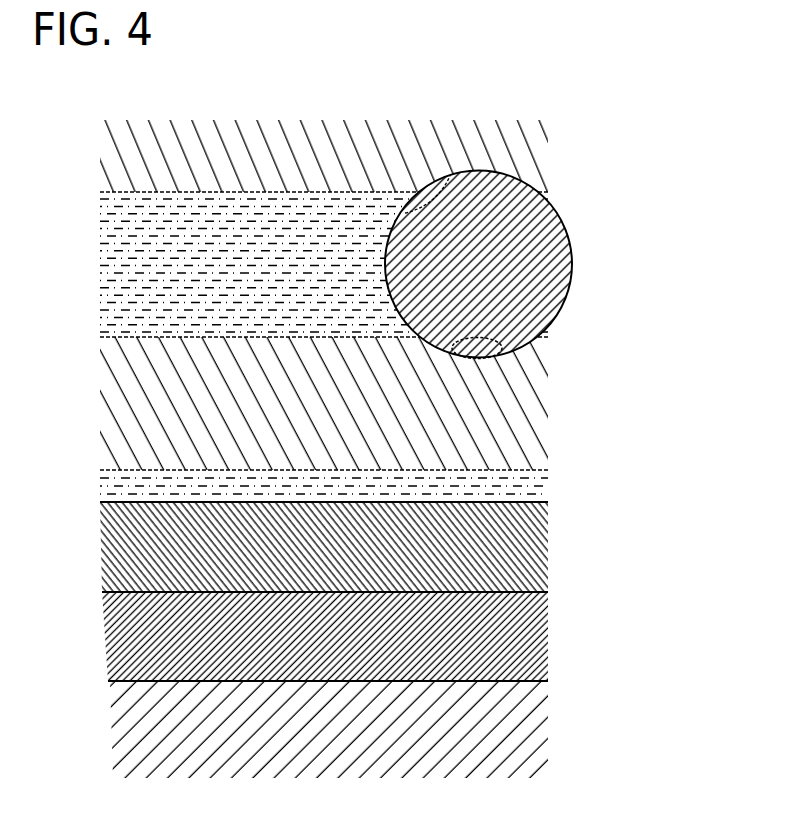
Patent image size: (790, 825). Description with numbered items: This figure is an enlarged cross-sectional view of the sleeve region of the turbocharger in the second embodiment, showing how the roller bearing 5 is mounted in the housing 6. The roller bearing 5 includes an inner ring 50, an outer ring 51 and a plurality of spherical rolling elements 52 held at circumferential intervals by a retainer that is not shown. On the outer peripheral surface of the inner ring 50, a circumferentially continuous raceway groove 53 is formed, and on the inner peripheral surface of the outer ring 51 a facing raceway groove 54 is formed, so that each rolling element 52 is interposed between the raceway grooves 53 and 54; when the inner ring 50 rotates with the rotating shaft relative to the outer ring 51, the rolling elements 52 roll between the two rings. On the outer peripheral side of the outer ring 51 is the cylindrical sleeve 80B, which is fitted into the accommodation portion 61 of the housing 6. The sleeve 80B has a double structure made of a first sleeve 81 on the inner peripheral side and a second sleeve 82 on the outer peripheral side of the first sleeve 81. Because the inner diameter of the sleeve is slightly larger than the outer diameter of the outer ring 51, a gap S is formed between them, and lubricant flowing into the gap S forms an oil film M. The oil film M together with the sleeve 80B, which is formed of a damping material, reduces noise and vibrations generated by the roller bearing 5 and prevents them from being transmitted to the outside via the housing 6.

The roller bearing 5 is at (395, 295).
The inner ring 50 is at (542, 160).
The rolling element 52 is at (556, 207).
The outer ring 51 is at (365, 347).
The raceway groove 53 is at (405, 213).
The raceway groove 54 is at (502, 358).
The gap S is at (543, 482).
The oil film M is at (386, 461).
The sleeve 80B is at (406, 591).
The first sleeve 81 is at (543, 553).
The second sleeve 82 is at (368, 626).
The accommodation portion 61 is at (542, 732).
The housing 6 is at (402, 729).